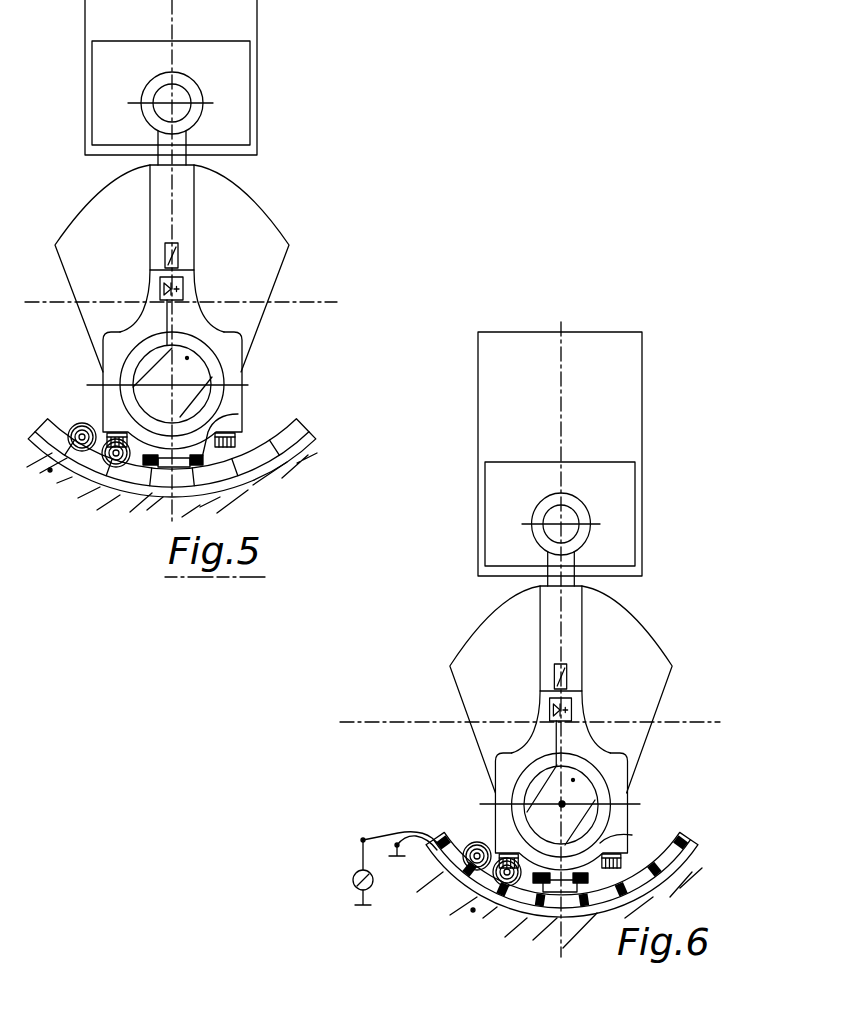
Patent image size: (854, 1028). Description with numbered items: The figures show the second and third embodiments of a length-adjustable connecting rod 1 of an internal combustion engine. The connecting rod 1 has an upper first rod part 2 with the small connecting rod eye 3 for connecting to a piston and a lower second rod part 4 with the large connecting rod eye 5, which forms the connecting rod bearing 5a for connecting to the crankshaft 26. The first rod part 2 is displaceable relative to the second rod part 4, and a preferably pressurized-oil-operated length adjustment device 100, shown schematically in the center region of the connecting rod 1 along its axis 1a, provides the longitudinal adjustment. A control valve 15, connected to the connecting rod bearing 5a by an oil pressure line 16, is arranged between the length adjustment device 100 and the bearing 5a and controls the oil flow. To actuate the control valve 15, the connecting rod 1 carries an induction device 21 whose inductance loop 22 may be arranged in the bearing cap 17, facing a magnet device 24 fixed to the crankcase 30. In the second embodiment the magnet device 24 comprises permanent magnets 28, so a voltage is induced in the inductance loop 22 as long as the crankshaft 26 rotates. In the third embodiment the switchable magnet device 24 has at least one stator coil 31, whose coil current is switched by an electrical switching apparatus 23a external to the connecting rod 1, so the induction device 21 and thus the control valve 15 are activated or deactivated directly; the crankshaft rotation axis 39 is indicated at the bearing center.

In FIG. 5, the connecting rod 1 is at (197, 231).
In FIG. 6, the connecting rod 1 is at (580, 645).
In FIG. 5, the longitudinal axis 1a is at (172, 210).
In FIG. 6, the longitudinal axis 1a is at (558, 622).
In FIG. 5, the first rod part 2 is at (158, 137).
In FIG. 6, the first rod part 2 is at (570, 560).
In FIG. 5, the small connecting rod eye 3 is at (187, 115).
In FIG. 6, the small connecting rod eye 3 is at (573, 512).
In FIG. 5, the second rod part 4 is at (235, 347).
In FIG. 6, the second rod part 4 is at (615, 762).
In FIG. 5, the large connecting rod eye 5 is at (140, 376).
In FIG. 6, the large connecting rod eye 5 is at (538, 782).
In FIG. 5, the connecting rod bearing 5a is at (145, 403).
In FIG. 6, the connecting rod bearing 5a is at (561, 805).
In FIG. 5, the control valve 15 is at (187, 283).
In FIG. 6, the control valve 15 is at (570, 710).
In FIG. 5, the oil pressure line 16 is at (163, 320).
In FIG. 6, the oil pressure line 16 is at (555, 735).
In FIG. 5, the bearing cap 17 is at (235, 398).
In FIG. 6, the bearing cap 17 is at (625, 815).
In FIG. 5, the induction device 21 is at (157, 472).
In FIG. 6, the induction device 21 is at (545, 870).
In FIG. 5, the inductance loop 22 is at (210, 476).
In FIG. 6, the inductance loop 22 is at (583, 890).
In FIG. 6, the electrical switching apparatus 23a is at (355, 877).
In FIG. 5, the magnet device 24 is at (293, 450).
In FIG. 6, the magnet device 24 is at (458, 882).
In FIG. 5, the crankshaft 26 is at (187, 358).
In FIG. 6, the crankshaft 26 is at (573, 780).
In FIG. 5, the permanent magnets 28 is at (45, 420).
In FIG. 6, the permanent magnets 28 is at (492, 864).
In FIG. 5, the crankcase 30 is at (50, 470).
In FIG. 6, the crankcase 30 is at (473, 910).
In FIG. 6, the stator coil 31 is at (690, 845).
In FIG. 6, the rotation axis 39 is at (562, 804).
In FIG. 5, the length adjustment device 100 is at (167, 248).
In FIG. 6, the length adjustment device 100 is at (553, 673).